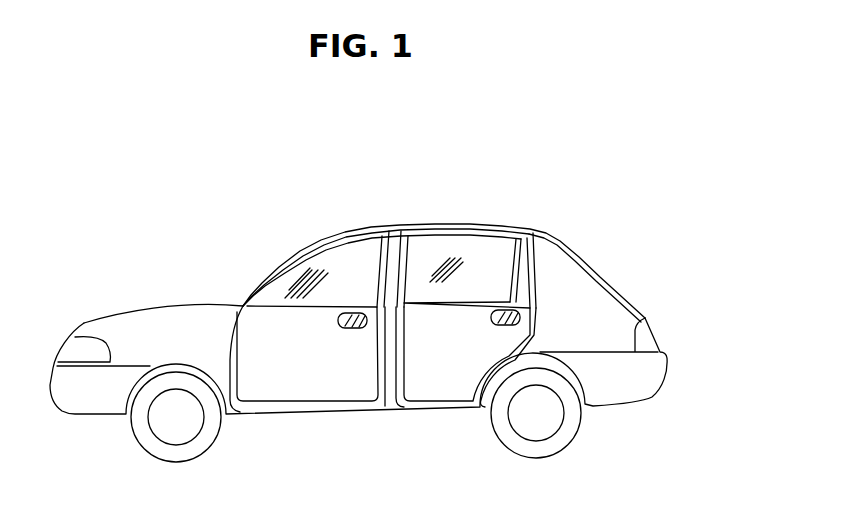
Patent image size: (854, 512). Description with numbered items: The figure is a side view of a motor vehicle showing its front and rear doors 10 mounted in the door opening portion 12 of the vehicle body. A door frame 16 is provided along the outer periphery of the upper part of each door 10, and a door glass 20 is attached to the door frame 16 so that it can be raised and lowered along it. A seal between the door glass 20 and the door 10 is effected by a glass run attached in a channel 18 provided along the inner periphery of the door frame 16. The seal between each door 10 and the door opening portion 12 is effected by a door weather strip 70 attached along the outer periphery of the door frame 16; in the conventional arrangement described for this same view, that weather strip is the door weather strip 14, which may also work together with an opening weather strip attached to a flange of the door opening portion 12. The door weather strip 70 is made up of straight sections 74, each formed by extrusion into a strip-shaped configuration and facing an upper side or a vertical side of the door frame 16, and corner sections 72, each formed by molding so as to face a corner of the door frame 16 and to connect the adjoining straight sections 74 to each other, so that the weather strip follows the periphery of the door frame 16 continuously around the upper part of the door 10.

The door 10 is at (308, 376).
The door opening portion 12 is at (332, 230).
The door weather strip 14 is at (310, 253).
The door frame 16 is at (270, 257).
The channel 18 is at (378, 226).
The door glass 20 is at (277, 302).
The door weather strip 70 is at (388, 221).
The corner section 72 is at (567, 235).
The straight section 74 is at (445, 222).